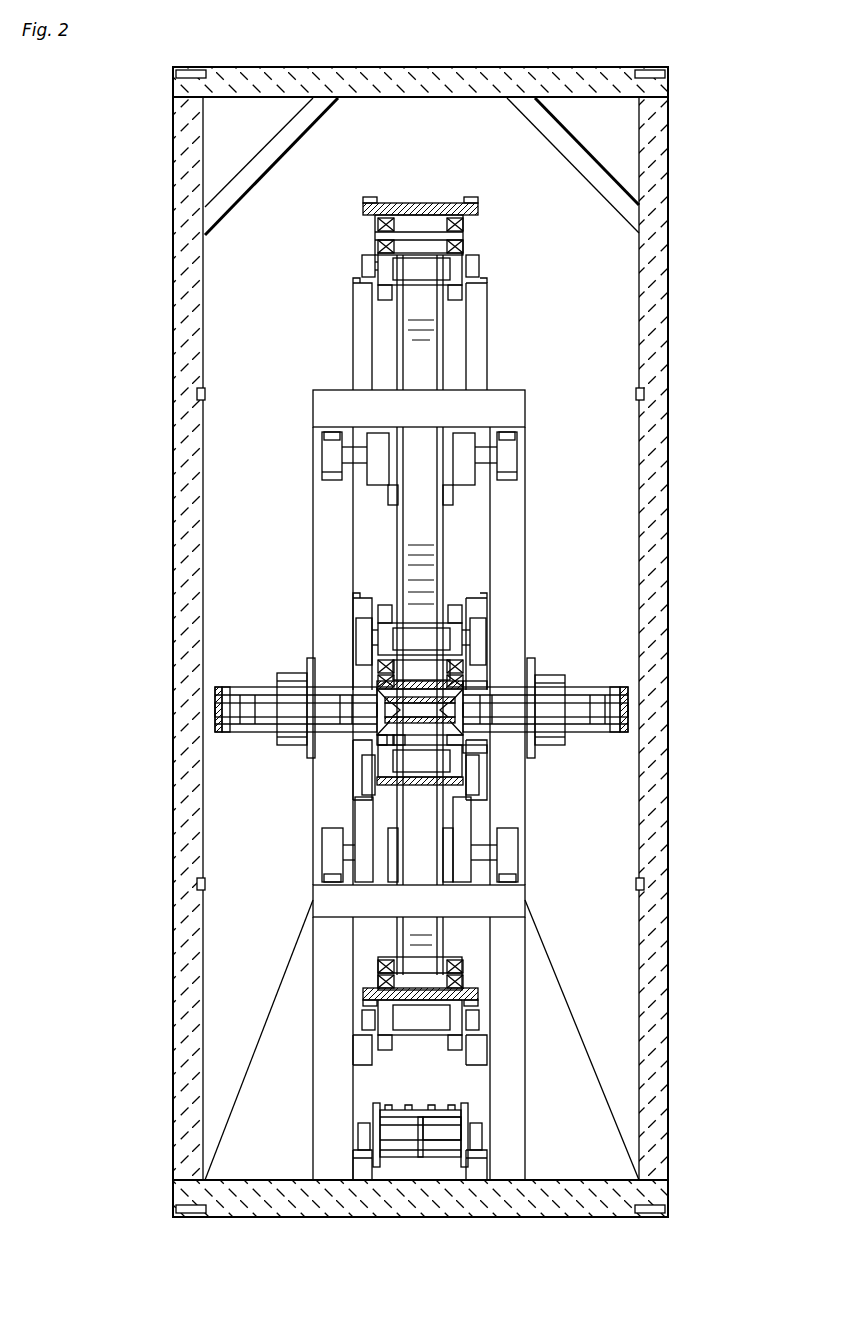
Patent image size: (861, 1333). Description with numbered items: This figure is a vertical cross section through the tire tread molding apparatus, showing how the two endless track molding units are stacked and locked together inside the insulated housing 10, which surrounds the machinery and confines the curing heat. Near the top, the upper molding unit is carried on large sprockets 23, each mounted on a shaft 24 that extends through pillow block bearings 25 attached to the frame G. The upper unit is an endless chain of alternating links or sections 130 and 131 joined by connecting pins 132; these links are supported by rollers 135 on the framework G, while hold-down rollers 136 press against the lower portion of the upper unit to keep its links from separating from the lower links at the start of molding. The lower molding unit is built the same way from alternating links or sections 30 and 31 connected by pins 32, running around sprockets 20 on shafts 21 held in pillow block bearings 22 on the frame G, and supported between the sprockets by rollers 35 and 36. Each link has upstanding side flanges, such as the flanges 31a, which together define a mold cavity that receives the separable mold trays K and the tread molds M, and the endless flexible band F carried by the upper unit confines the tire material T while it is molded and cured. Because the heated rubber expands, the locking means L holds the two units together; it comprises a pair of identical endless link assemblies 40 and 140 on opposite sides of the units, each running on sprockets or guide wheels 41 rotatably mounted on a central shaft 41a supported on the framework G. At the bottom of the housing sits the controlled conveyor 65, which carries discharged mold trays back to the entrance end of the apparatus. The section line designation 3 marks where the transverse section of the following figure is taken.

The insulated housing 10 is at (182, 323).
The links or sections 130 is at (432, 203).
The links or sections 131 is at (463, 243).
The connecting pins 132 is at (463, 227).
The supporting rollers 135 is at (362, 262).
The hold-down rollers 136 is at (388, 625).
The sprockets 23 is at (447, 362).
The frame G is at (310, 406).
The shaft 24 is at (480, 452).
The pillow block bearings 25 is at (330, 483).
The endless link assembly 140 is at (256, 684).
The locking means L is at (226, 684).
The endless flexible band F is at (467, 682).
The central shaft 41a is at (544, 684).
The locking assembly 40 is at (580, 685).
The sprockets or guide wheels 41 is at (583, 708).
The mold trays K is at (466, 736).
The connecting pins 32 is at (468, 750).
The upstanding side flanges 31a is at (385, 740).
The tire material T is at (398, 745).
The links or sections 30 is at (378, 770).
The supporting rollers 35 is at (362, 792).
The pillow block bearings 22 is at (330, 832).
The shafts 21 is at (382, 868).
The sprockets 20 is at (423, 863).
The links or sections 31 is at (426, 745).
The supporting rollers 36 is at (387, 1052).
The tire tread molds M is at (425, 1108).
The conveyor 65 is at (407, 1160).
The section line 3- 3 is at (110, 688).